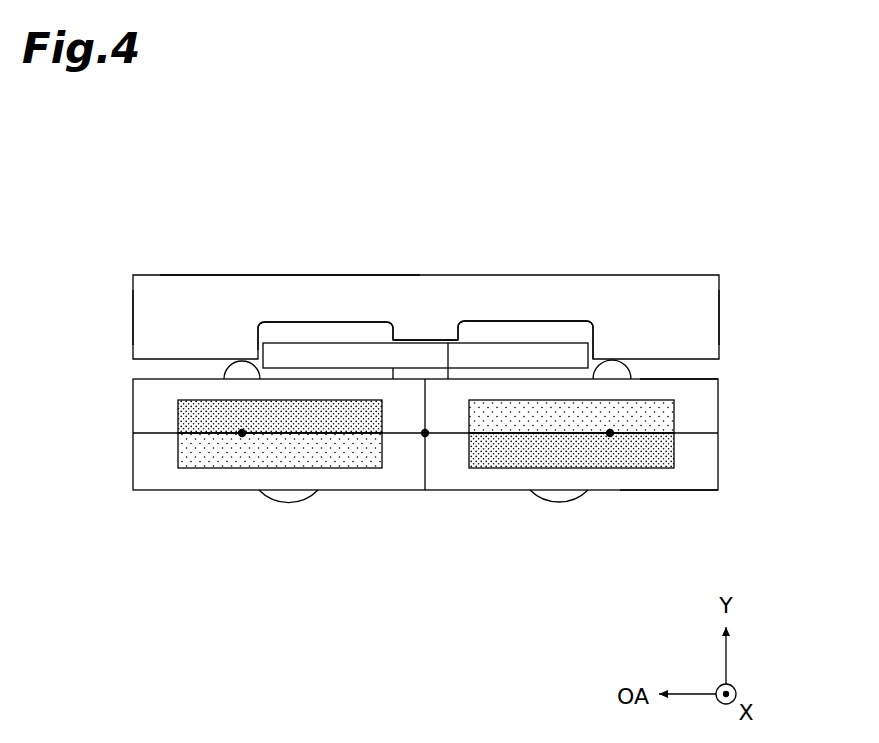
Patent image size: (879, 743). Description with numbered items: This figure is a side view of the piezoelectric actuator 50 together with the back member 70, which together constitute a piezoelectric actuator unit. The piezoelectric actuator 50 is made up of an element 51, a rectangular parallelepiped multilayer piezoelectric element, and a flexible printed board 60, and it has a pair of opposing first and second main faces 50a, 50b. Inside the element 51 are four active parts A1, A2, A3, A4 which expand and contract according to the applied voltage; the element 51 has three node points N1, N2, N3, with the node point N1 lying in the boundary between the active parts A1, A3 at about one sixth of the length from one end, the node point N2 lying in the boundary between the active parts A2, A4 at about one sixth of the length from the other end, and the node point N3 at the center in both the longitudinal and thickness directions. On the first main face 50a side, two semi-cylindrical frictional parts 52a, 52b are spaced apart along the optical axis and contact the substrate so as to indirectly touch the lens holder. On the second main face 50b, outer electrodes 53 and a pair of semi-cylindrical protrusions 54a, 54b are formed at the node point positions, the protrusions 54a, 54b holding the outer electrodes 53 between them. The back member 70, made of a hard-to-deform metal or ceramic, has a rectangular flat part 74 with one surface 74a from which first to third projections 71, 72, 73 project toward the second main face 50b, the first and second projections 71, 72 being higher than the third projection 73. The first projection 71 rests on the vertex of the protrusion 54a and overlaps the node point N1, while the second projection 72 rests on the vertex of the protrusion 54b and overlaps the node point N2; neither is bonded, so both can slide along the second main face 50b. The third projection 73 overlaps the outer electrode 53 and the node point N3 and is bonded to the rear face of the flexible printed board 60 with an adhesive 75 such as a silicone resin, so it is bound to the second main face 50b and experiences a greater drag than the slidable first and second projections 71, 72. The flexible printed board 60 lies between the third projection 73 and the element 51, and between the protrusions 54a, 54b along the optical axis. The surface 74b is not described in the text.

The back member 70 is at (711, 227).
The first projection 71 is at (146, 338).
The second projection 72 is at (707, 325).
The third projection 73 is at (403, 323).
The flat part 74 is at (350, 290).
The one surface 74a is at (302, 328).
The top surface 74b is at (214, 274).
The adhesive 75 is at (427, 338).
The outer electrode 53 is at (448, 346).
The flexible printed board 60 is at (560, 355).
The protrusion 54a is at (235, 369).
The protrusion 54b is at (612, 372).
The piezoelectric actuator 50 is at (783, 391).
The first main face 50a is at (701, 491).
The second main face 50b is at (717, 372).
The element 51 is at (720, 450).
The frictional part 52a is at (287, 498).
The frictional part 52b is at (557, 498).
The active part A1 is at (383, 410).
The active part A2 is at (470, 412).
The active part A3 is at (353, 453).
The active part A4 is at (498, 455).
The node point N1 is at (242, 437).
The node point N2 is at (610, 437).
The node point N3 is at (425, 437).